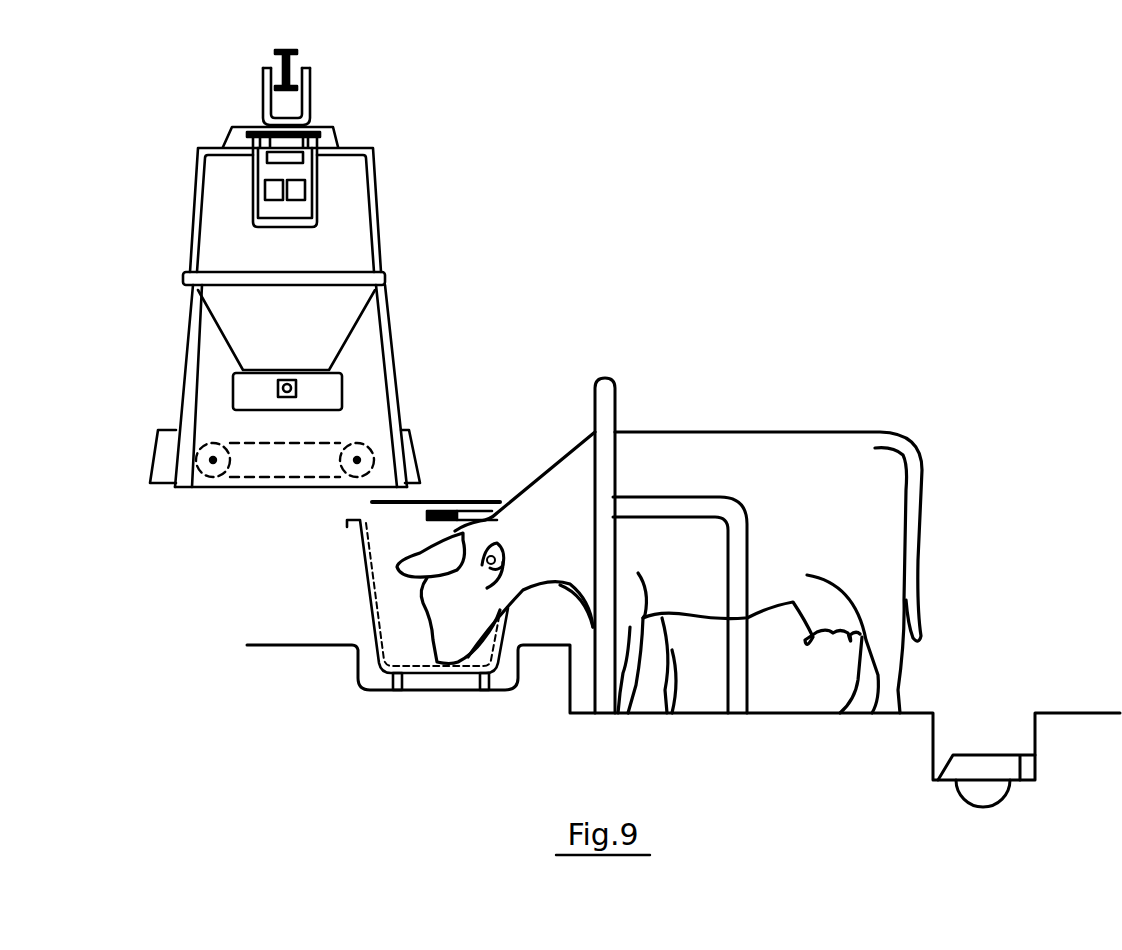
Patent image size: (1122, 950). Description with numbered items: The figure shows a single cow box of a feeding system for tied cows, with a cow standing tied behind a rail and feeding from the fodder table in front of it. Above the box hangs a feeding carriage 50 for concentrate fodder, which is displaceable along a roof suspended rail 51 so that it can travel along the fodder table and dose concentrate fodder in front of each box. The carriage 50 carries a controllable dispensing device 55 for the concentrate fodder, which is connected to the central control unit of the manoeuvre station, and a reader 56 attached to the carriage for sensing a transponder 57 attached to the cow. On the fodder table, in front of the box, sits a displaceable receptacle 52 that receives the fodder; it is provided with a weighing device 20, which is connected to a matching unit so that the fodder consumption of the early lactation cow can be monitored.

The weighing device 20 is at (440, 502).
The feeding carriage 50 is at (378, 217).
The roof suspended rail 51 is at (288, 64).
The displaceable receptacle 52 is at (365, 600).
The controllable dispensing device 55 is at (237, 473).
The reader 56 is at (407, 442).
The transponder 57 is at (503, 550).